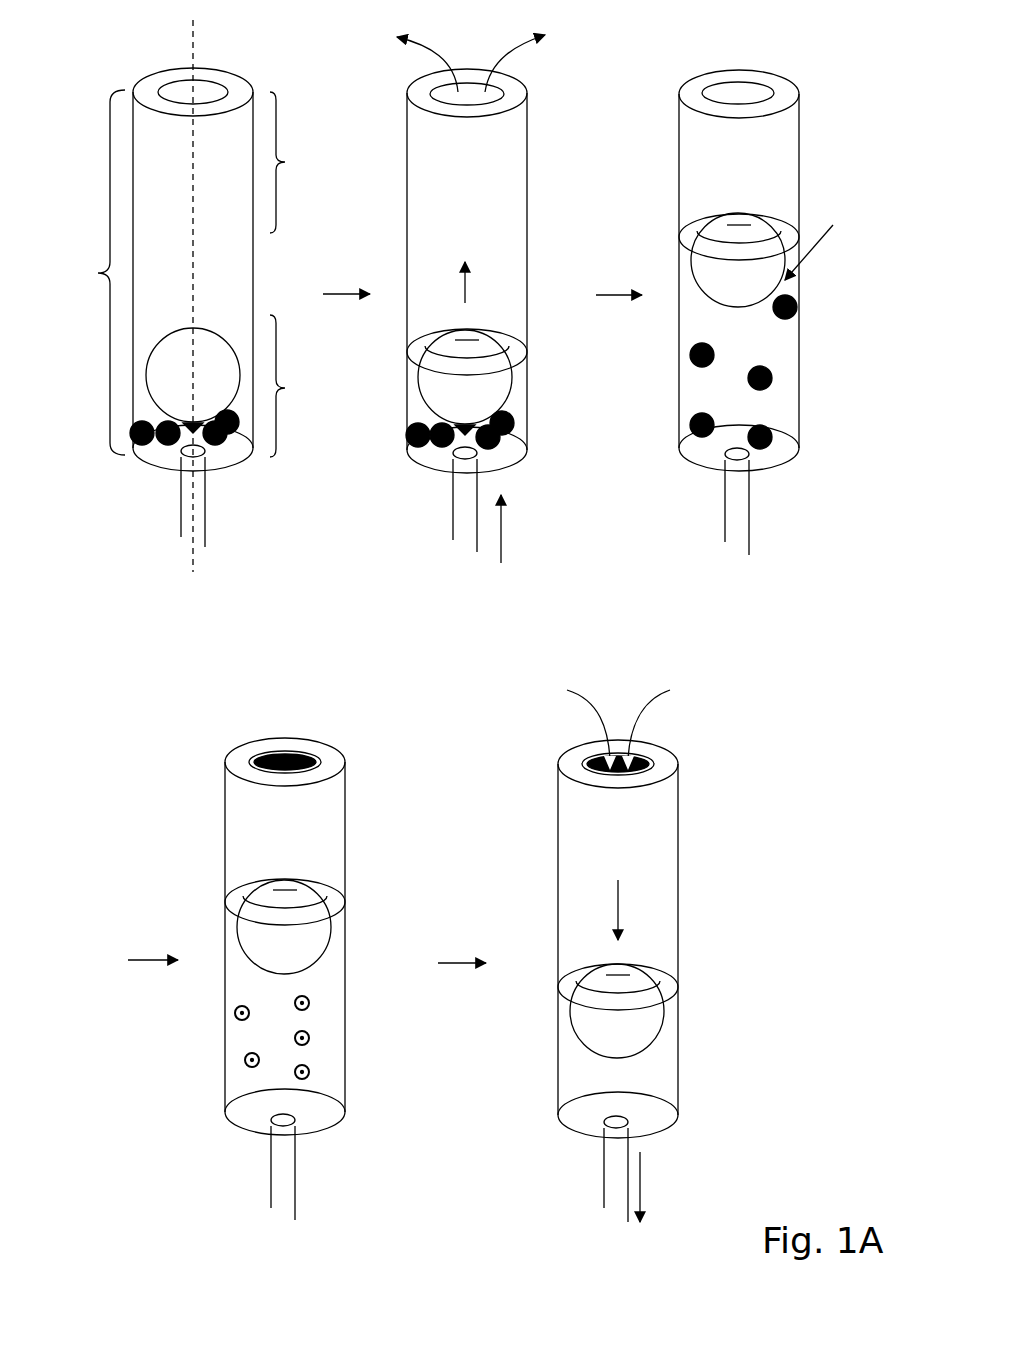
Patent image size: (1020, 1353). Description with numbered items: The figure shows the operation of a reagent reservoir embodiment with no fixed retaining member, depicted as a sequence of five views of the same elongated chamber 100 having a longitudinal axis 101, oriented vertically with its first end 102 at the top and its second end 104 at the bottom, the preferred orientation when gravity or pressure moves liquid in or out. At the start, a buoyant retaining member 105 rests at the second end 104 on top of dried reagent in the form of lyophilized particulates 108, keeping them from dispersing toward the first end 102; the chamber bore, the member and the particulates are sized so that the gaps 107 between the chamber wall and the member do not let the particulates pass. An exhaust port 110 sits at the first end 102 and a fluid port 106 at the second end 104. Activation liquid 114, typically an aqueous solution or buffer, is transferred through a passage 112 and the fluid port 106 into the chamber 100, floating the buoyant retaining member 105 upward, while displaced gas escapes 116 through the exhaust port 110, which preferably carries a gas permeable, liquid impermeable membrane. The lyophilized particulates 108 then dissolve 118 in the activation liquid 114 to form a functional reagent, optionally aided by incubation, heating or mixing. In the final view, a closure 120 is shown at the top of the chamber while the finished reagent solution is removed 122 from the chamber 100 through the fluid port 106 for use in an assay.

The elongated chamber 100 is at (92, 282).
The longitudinal axis 101 is at (193, 268).
The first end 102 is at (285, 162).
The second end 104 is at (285, 388).
The buoyant retaining member 105 is at (228, 375).
The fluid port 106 is at (175, 462).
The gaps 107 is at (145, 345).
The lyophilized particulates 108 is at (137, 443).
The exhaust port 110 is at (170, 91).
The passage 112 is at (503, 528).
The activation liquid 114 is at (513, 398).
The gas escape 116 is at (430, 45).
The dissolution 118 is at (320, 1020).
The sealing cap 120 is at (650, 703).
The removal 122 is at (643, 1173).